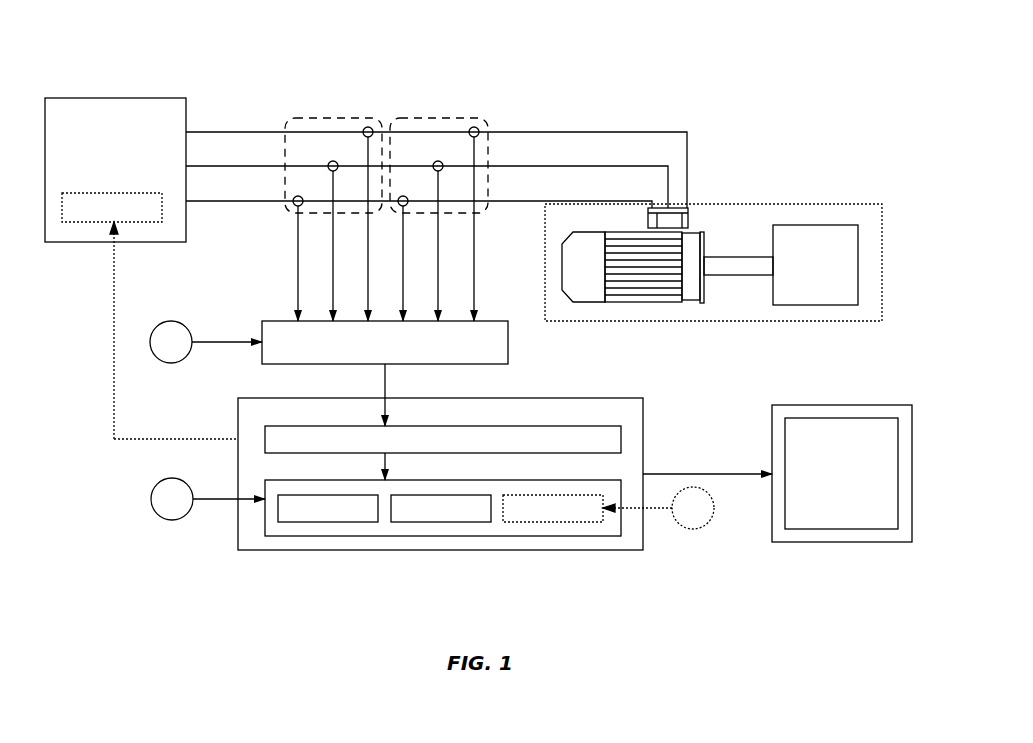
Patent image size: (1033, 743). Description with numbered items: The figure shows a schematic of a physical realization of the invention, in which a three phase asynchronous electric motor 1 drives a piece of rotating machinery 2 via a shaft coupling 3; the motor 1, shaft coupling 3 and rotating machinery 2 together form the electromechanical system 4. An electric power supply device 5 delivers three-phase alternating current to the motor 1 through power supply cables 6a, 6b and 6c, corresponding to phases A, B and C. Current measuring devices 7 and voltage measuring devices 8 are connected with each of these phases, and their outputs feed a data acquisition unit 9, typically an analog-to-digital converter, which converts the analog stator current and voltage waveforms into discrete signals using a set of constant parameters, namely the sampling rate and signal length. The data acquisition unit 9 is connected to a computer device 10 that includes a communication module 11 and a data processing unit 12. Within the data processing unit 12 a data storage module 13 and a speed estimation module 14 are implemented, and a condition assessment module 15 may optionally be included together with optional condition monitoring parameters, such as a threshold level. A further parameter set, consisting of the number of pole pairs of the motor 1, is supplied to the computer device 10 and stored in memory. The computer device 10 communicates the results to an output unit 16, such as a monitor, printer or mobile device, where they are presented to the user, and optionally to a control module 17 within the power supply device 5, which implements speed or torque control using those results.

The three phase asynchronous electric motor 1 is at (698, 232).
The rotating machinery 2 is at (824, 233).
The shaft coupling 3 is at (733, 262).
The electromechanical system 4 is at (865, 321).
The electric power supply device 5 is at (162, 110).
The power supply cable 6a is at (642, 132).
The power supply cable 6b is at (570, 166).
The power supply cable 6c is at (500, 201).
The current measuring devices 7 is at (322, 118).
The voltage measuring devices 8 is at (462, 118).
The data acquisition unit 9 is at (275, 351).
The computer device 10 is at (250, 538).
The communication module 11 is at (490, 433).
The data processing unit 12 is at (295, 537).
The data storage module 13 is at (318, 513).
The speed estimation module 14 is at (478, 513).
The condition assessment module 15 is at (572, 512).
The output unit 16 is at (852, 515).
The control module 17 is at (72, 215).